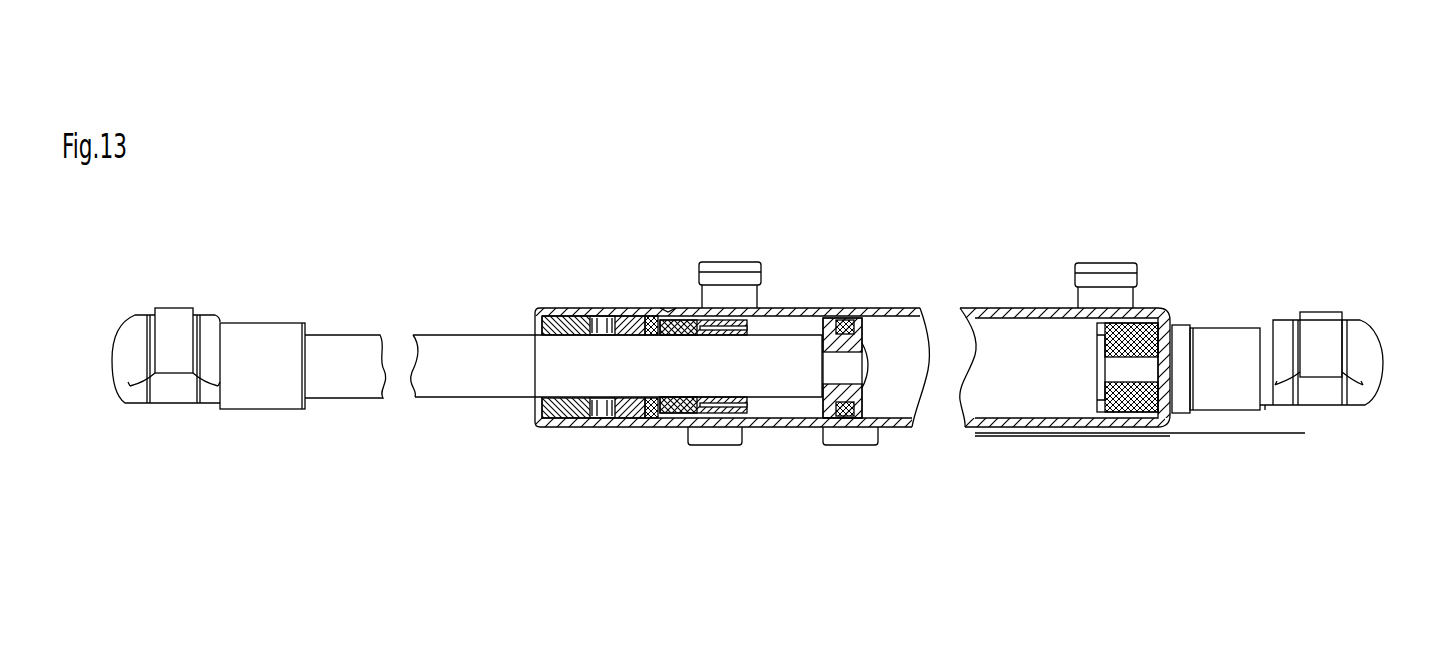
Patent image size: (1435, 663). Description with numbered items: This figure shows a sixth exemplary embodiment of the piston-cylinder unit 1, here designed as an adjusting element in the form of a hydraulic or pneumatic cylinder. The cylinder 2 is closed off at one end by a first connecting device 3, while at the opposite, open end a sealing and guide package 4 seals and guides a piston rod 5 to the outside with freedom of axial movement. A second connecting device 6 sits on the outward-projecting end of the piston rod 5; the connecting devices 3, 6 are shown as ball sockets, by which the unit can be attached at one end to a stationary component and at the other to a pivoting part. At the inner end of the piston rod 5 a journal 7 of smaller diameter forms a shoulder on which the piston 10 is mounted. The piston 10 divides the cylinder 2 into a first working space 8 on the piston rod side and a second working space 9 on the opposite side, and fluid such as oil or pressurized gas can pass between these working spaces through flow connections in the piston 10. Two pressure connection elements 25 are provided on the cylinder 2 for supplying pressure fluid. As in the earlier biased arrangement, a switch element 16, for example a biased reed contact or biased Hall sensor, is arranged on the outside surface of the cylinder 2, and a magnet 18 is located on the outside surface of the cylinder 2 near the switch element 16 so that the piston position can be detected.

The piston-cylinder unit 1 is at (920, 293).
The cylinder 2 is at (990, 312).
The first connecting device 3 is at (1358, 343).
The sealing and guide package 4 is at (601, 460).
The piston rod 5 is at (328, 350).
The second connecting device 6 is at (135, 338).
The journal 7 is at (838, 365).
The first working space 8 is at (772, 408).
The second working space 9 is at (1040, 400).
The piston 10 is at (830, 416).
The switch element 16 is at (858, 435).
The magnet 18 is at (700, 438).
The pressure connection elements 25 is at (720, 305).